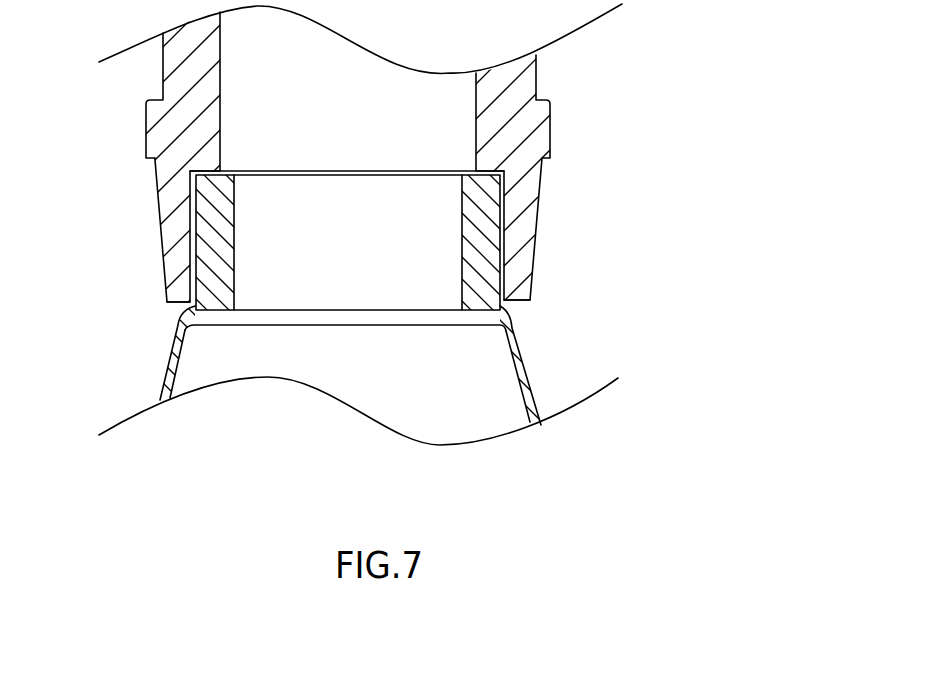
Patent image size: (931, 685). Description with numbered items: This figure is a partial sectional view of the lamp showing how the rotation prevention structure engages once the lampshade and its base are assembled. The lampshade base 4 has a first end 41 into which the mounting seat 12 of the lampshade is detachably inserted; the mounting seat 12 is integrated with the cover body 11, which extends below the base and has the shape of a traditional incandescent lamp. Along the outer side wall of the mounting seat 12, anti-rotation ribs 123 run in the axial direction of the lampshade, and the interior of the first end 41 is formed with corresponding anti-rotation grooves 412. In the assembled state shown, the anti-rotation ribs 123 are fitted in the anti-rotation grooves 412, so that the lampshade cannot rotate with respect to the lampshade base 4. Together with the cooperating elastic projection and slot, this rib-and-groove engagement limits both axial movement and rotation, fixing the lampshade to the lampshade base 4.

The lampshade base 4 is at (528, 117).
The anti-rotation grooves 412 is at (504, 192).
The first end 41 is at (498, 301).
The mounting seat 12 is at (497, 302).
The anti-rotation ribs 123 is at (479, 236).
The cover body 11 is at (530, 395).